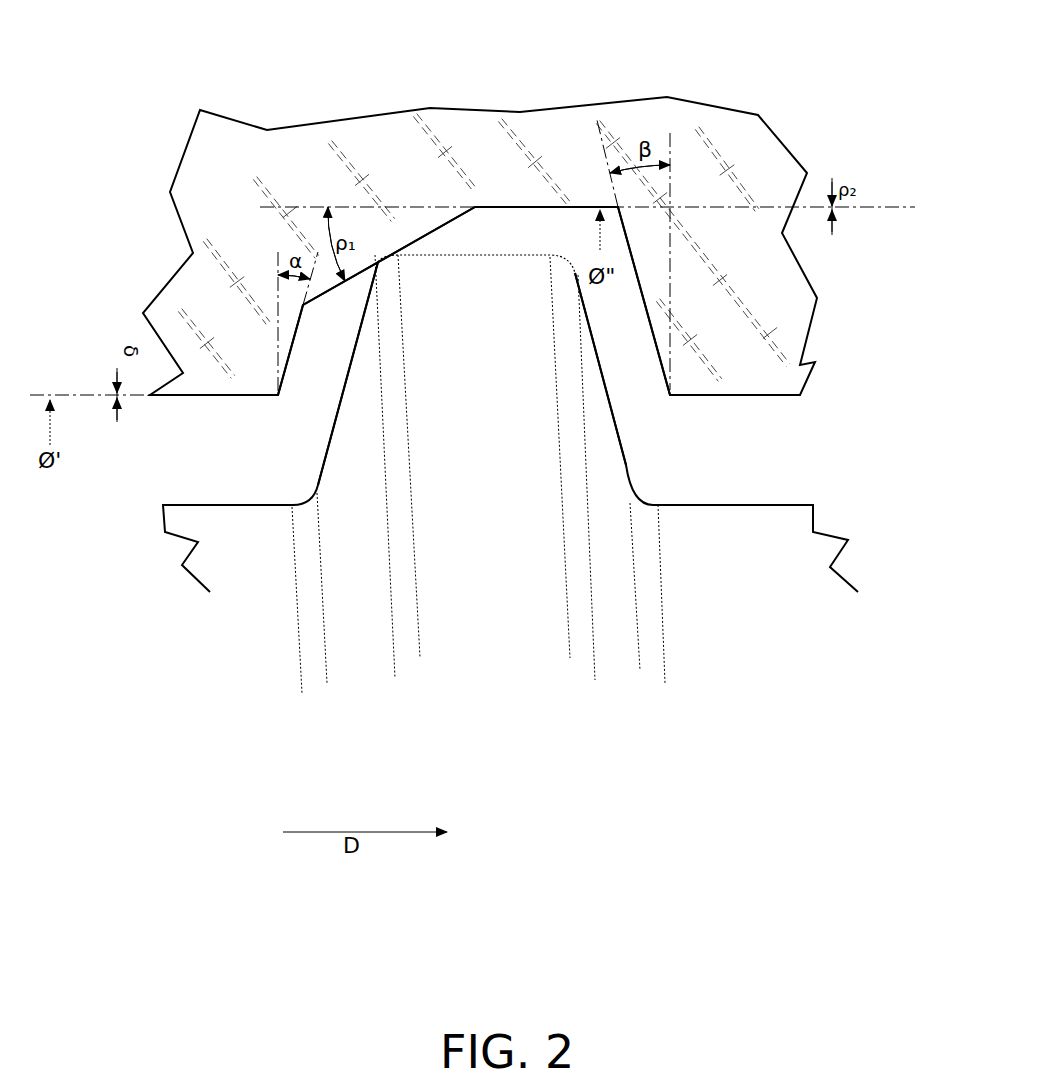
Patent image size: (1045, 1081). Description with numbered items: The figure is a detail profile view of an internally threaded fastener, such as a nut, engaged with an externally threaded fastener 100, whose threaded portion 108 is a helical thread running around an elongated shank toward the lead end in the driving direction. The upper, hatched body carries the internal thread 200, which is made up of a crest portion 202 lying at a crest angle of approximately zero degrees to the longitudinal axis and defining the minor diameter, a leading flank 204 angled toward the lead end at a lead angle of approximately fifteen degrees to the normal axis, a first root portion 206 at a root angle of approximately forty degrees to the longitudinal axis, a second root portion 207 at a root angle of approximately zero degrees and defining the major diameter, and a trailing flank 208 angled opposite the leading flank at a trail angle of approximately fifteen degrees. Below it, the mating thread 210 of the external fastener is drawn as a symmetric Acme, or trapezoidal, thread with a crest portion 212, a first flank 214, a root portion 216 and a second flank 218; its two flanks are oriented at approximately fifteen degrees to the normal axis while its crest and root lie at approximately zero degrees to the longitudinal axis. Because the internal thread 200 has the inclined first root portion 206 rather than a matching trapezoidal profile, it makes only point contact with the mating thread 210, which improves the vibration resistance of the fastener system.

The externally threaded fastener 100 is at (850, 540).
The threaded portion 108 is at (632, 468).
The thread 200 is at (193, 107).
The crest portion 202 is at (220, 397).
The leading flank 204 is at (290, 342).
The first root portion 206 is at (437, 228).
The second root portion 207 is at (583, 205).
The trailing flank 208 is at (640, 270).
The mating thread 210 is at (275, 668).
The crest portion 212 is at (427, 258).
The first flank 214 is at (613, 425).
The root portion 216 is at (708, 507).
The second flank 218 is at (340, 408).